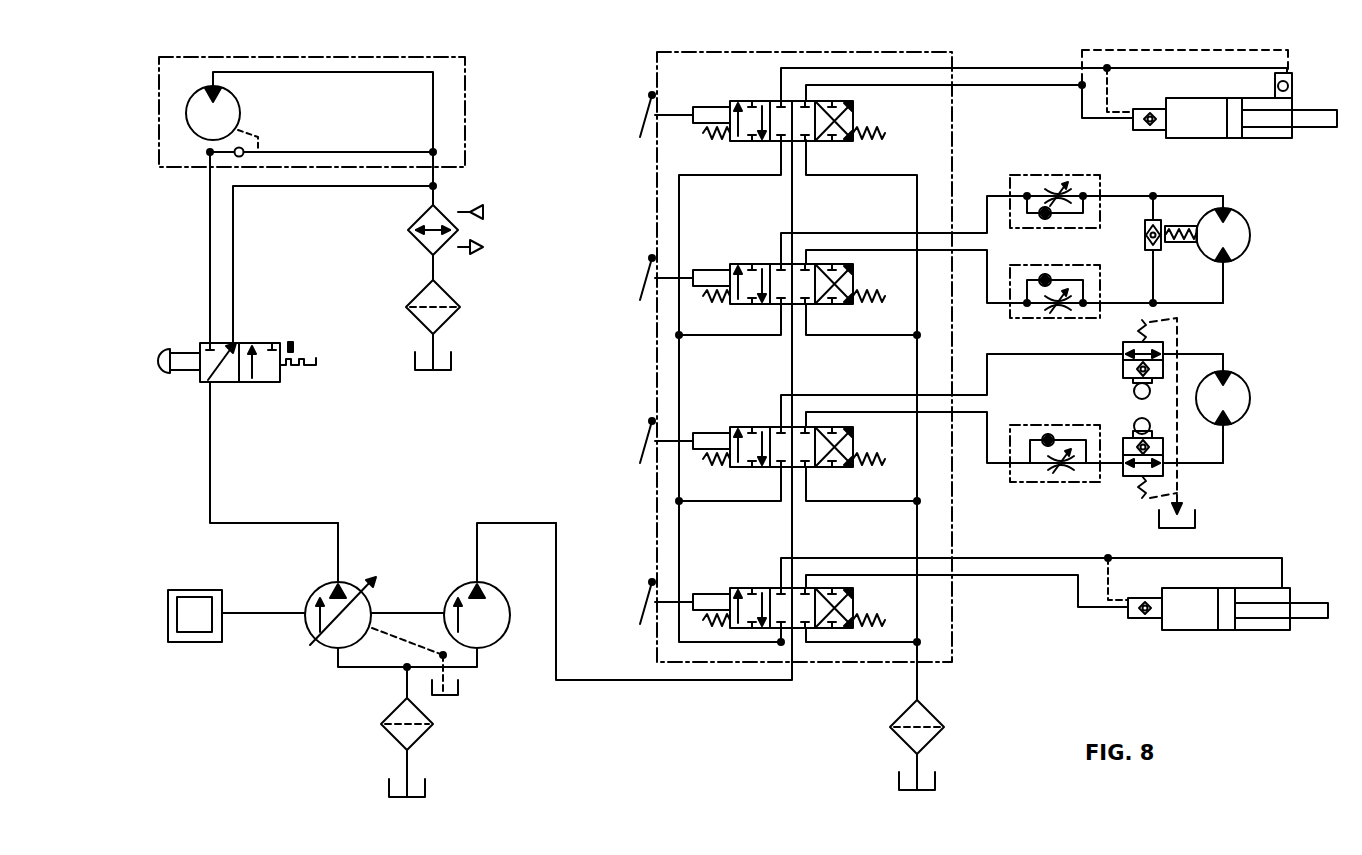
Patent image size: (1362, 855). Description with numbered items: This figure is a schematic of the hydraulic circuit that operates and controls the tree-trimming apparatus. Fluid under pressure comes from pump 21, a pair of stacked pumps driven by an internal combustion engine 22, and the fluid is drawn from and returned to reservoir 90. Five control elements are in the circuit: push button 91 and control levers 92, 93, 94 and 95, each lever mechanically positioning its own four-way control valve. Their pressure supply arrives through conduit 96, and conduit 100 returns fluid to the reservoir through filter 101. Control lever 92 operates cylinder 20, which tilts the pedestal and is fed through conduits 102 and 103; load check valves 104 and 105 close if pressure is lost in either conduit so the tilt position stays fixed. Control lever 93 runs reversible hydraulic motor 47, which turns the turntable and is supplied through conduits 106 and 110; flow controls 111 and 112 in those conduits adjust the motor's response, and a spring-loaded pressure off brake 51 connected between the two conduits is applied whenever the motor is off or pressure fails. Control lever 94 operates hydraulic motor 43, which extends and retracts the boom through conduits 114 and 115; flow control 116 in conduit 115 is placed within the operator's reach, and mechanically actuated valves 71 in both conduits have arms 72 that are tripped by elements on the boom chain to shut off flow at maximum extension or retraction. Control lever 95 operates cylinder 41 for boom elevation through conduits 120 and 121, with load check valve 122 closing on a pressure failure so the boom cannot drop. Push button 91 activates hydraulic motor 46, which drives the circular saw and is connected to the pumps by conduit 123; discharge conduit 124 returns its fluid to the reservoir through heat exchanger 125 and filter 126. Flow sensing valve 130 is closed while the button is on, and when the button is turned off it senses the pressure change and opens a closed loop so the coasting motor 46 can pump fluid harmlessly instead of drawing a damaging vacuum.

The cylinder 20 is at (1227, 140).
The pump 21 is at (350, 586).
The engine 22 is at (200, 600).
The cylinder 41 is at (1220, 632).
The hydraulic motor 43 is at (1250, 398).
The hydraulic motor 46 is at (240, 116).
The hydraulic motor 47 is at (1250, 235).
The pressure off brake 51 is at (1145, 241).
The valves 71 is at (1123, 375).
The arms 72 is at (1133, 392).
The reservoir 90 is at (452, 366).
The push button 91 is at (173, 349).
The control lever 92 is at (640, 134).
The control lever 93 is at (640, 279).
The control lever 94 is at (640, 442).
The control lever 95 is at (640, 605).
The conduit 96 is at (556, 523).
The conduit 100 is at (917, 612).
The filter 101 is at (944, 720).
The conduit 102 is at (1007, 95).
The conduit 103 is at (1015, 68).
The load check valve 104 is at (1143, 130).
The load check valve 105 is at (1293, 88).
The conduit 106 is at (886, 252).
The conduit 110 is at (897, 236).
The flow control 111 is at (1027, 322).
The flow control 112 is at (1033, 175).
The conduit 114 is at (893, 388).
The conduit 115 is at (900, 415).
The flow control 116 is at (1022, 425).
The conduit 120 is at (878, 560).
The conduit 121 is at (883, 575).
The load check valve 122 is at (1135, 618).
The conduit 123 is at (210, 470).
The discharge conduit 124 is at (433, 175).
The heat exchanger 125 is at (458, 230).
The filter 126 is at (460, 303).
The flow sensing valve 130 is at (242, 157).